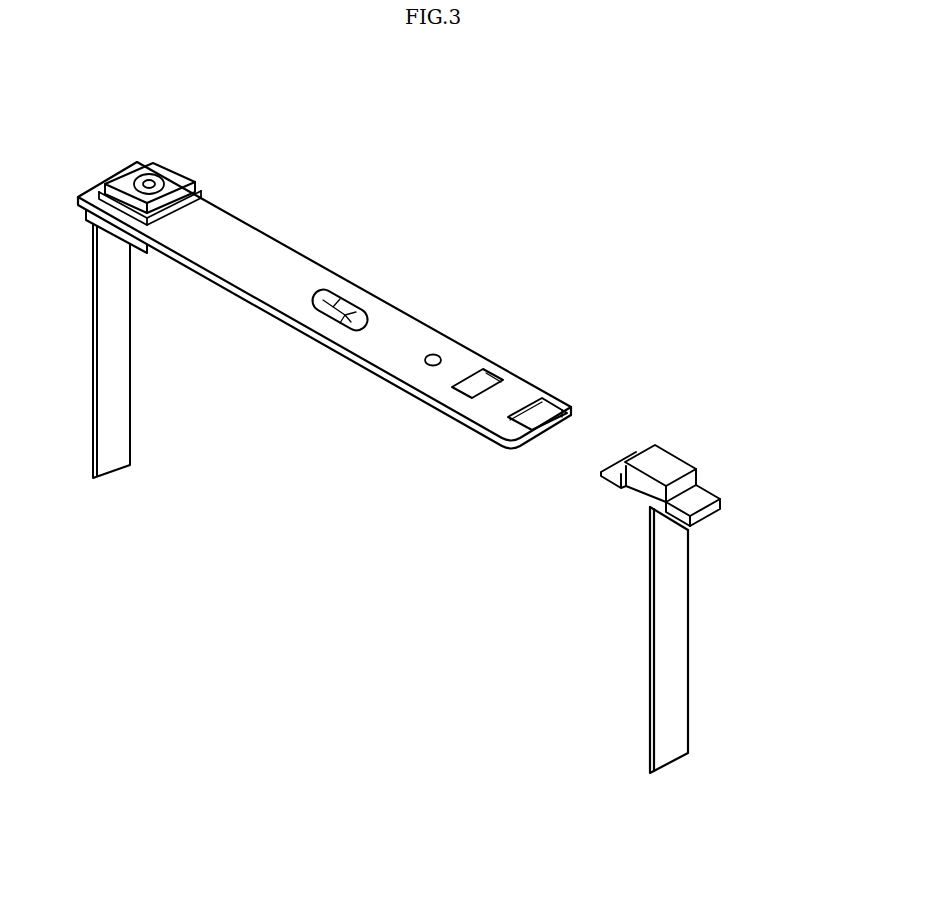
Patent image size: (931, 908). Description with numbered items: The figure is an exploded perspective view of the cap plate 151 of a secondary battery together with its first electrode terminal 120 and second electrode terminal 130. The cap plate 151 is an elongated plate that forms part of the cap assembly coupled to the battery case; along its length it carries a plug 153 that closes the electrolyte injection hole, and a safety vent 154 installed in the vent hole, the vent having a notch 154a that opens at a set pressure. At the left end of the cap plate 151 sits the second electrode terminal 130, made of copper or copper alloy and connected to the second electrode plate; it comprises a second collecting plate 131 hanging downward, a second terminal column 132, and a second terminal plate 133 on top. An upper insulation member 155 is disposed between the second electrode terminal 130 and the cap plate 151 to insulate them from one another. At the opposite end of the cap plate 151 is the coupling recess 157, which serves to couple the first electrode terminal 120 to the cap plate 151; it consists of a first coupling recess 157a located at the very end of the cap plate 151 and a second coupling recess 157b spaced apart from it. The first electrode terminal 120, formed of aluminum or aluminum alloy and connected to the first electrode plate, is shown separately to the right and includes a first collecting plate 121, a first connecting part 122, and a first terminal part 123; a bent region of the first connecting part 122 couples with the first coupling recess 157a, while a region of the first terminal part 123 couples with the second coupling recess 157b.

The first electrode terminal 120 is at (711, 593).
The first collecting plate 121 is at (678, 565).
The first connecting part 122 is at (700, 498).
The first terminal part 123 is at (664, 459).
The second electrode terminal 130 is at (172, 275).
The second collecting plate 131 is at (98, 295).
The second terminal column 132 is at (149, 184).
The second terminal plate 133 is at (172, 180).
The cap plate 151 is at (257, 275).
The plug 153 is at (422, 367).
The safety vent 154 is at (375, 271).
The notch 154a is at (332, 295).
The upper insulation member 155 is at (197, 210).
The coupling recess 157 is at (534, 356).
The first coupling recess 157a is at (545, 405).
The second coupling recess 157b is at (485, 372).